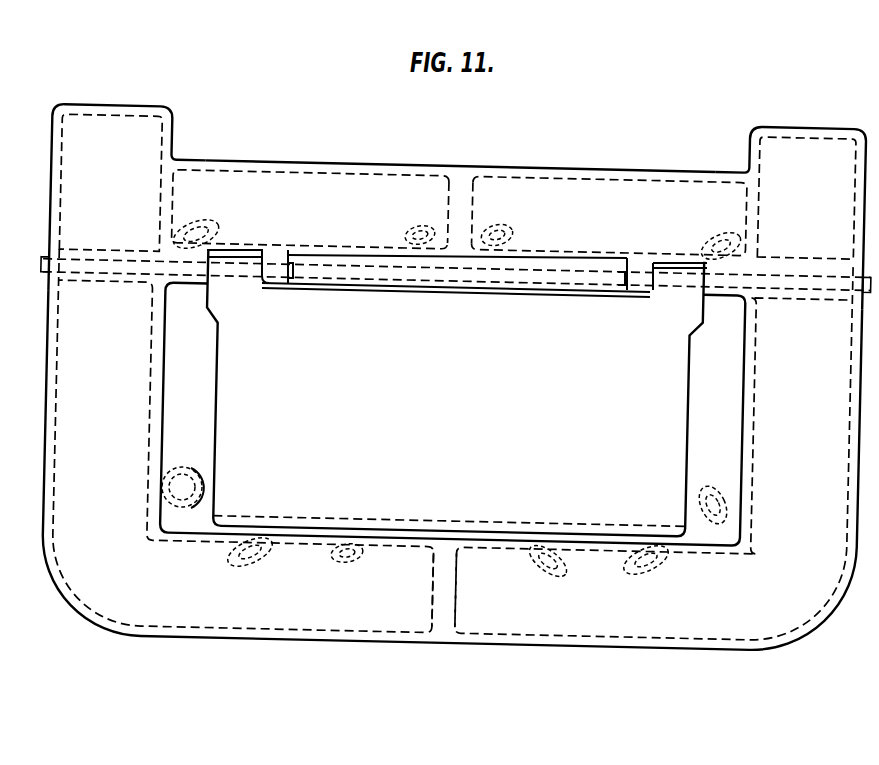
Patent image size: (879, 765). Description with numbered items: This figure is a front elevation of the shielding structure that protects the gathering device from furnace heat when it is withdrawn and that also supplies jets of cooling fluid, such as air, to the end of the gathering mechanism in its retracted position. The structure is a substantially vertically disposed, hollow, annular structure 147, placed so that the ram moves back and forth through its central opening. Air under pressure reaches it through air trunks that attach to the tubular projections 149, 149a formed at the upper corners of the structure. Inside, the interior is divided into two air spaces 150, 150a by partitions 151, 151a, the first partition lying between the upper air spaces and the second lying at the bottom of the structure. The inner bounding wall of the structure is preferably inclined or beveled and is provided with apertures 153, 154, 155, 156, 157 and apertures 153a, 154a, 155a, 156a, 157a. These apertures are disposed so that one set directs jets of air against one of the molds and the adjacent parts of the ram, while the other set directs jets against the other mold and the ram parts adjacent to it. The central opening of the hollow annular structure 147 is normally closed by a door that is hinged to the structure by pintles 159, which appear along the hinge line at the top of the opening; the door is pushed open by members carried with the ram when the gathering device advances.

The hollow annular structure 147 is at (387, 164).
The tubular projection 149 is at (122, 106).
The tubular projection 149a is at (794, 128).
The air space 150 is at (311, 202).
The air space 150a is at (587, 200).
The partition 151 is at (459, 200).
The partition 151a is at (447, 620).
The aperture 153 is at (413, 227).
The aperture 153a is at (498, 228).
The aperture 154 is at (208, 219).
The aperture 154a is at (730, 237).
The aperture 155 is at (208, 455).
The aperture 155a is at (733, 497).
The aperture 156 is at (260, 542).
The aperture 156a is at (648, 572).
The aperture 157 is at (352, 543).
The aperture 157a is at (548, 570).
The pintle 159 is at (142, 267).